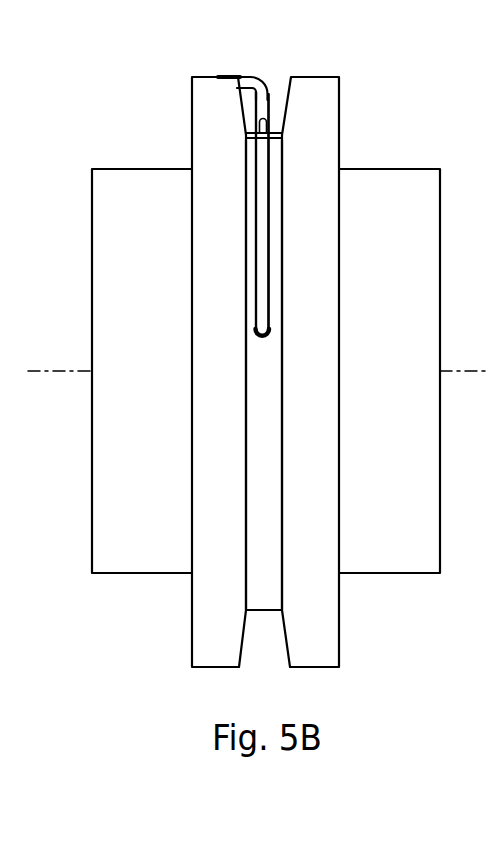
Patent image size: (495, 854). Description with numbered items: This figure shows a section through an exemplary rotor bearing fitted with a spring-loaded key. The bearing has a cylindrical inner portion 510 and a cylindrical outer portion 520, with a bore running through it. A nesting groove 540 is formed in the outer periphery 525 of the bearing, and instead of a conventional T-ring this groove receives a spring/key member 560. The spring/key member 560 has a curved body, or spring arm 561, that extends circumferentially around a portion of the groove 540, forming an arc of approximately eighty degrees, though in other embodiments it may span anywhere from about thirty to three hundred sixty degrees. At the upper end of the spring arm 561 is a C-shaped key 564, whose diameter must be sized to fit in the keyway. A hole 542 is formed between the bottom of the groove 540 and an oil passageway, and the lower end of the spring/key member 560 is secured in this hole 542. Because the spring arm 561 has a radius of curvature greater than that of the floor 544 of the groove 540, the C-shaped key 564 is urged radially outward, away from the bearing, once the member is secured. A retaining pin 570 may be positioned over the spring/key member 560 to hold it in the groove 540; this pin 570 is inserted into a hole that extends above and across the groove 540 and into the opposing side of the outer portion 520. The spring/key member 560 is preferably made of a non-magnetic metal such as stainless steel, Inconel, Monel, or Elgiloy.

The cylindrical inner portion 510 is at (137, 168).
The cylindrical outer portion 520 is at (192, 108).
The outer periphery 525 is at (210, 78).
The nesting groove 540 is at (283, 92).
The hole 542 is at (270, 332).
The floor of groove 544 is at (273, 395).
The spring/key member 560 is at (246, 259).
The spring arm 561 is at (268, 233).
The C-shaped key 564 is at (252, 77).
The retaining pin 570 is at (284, 131).